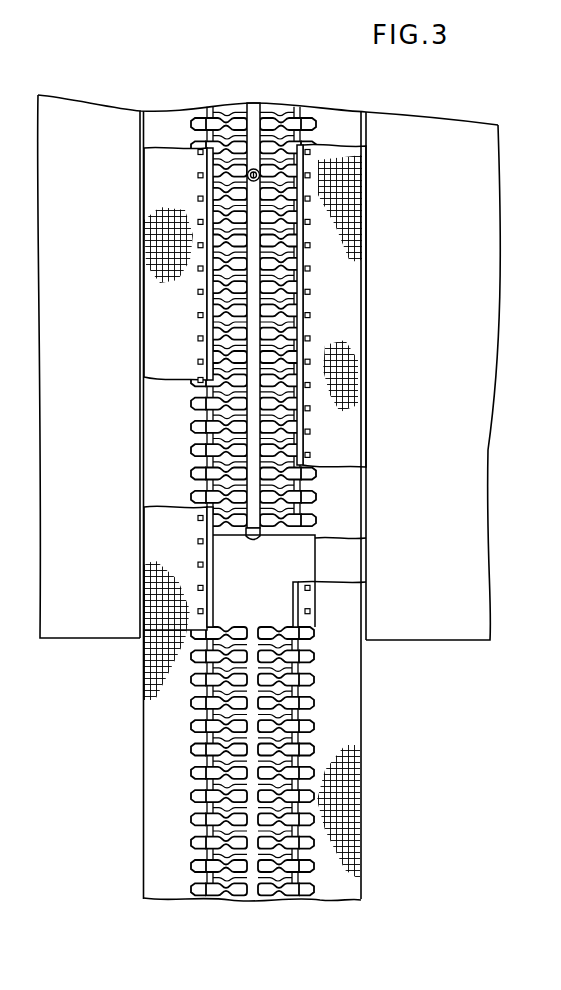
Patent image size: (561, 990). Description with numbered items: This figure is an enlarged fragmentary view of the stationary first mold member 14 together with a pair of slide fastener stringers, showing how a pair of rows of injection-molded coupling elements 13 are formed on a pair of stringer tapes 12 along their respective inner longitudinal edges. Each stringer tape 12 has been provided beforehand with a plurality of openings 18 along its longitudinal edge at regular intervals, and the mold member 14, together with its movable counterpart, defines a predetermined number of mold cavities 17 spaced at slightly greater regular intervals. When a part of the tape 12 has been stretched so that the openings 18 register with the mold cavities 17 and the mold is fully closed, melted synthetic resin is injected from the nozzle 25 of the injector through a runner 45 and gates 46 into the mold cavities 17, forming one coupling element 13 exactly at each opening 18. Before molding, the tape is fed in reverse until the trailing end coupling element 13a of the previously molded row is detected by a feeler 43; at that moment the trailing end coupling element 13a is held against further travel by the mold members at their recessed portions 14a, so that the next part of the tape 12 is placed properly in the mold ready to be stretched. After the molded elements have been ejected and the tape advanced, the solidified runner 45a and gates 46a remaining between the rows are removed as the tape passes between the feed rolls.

The stringer tape 12 is at (152, 733).
The injection-molded coupling elements 13 is at (312, 797).
The trailing end coupling element 13a is at (308, 626).
The first mold member 14 is at (85, 627).
The recessed portion 14a is at (212, 548).
The mold cavities 17 is at (206, 128).
The openings 18 is at (308, 407).
The nozzle 25 is at (254, 168).
The feeler 43 is at (252, 543).
The runner 45 is at (259, 276).
The gates 46 is at (297, 322).
The runner 45a is at (252, 895).
The lower end of right row of coupling elements 46a is at (267, 893).